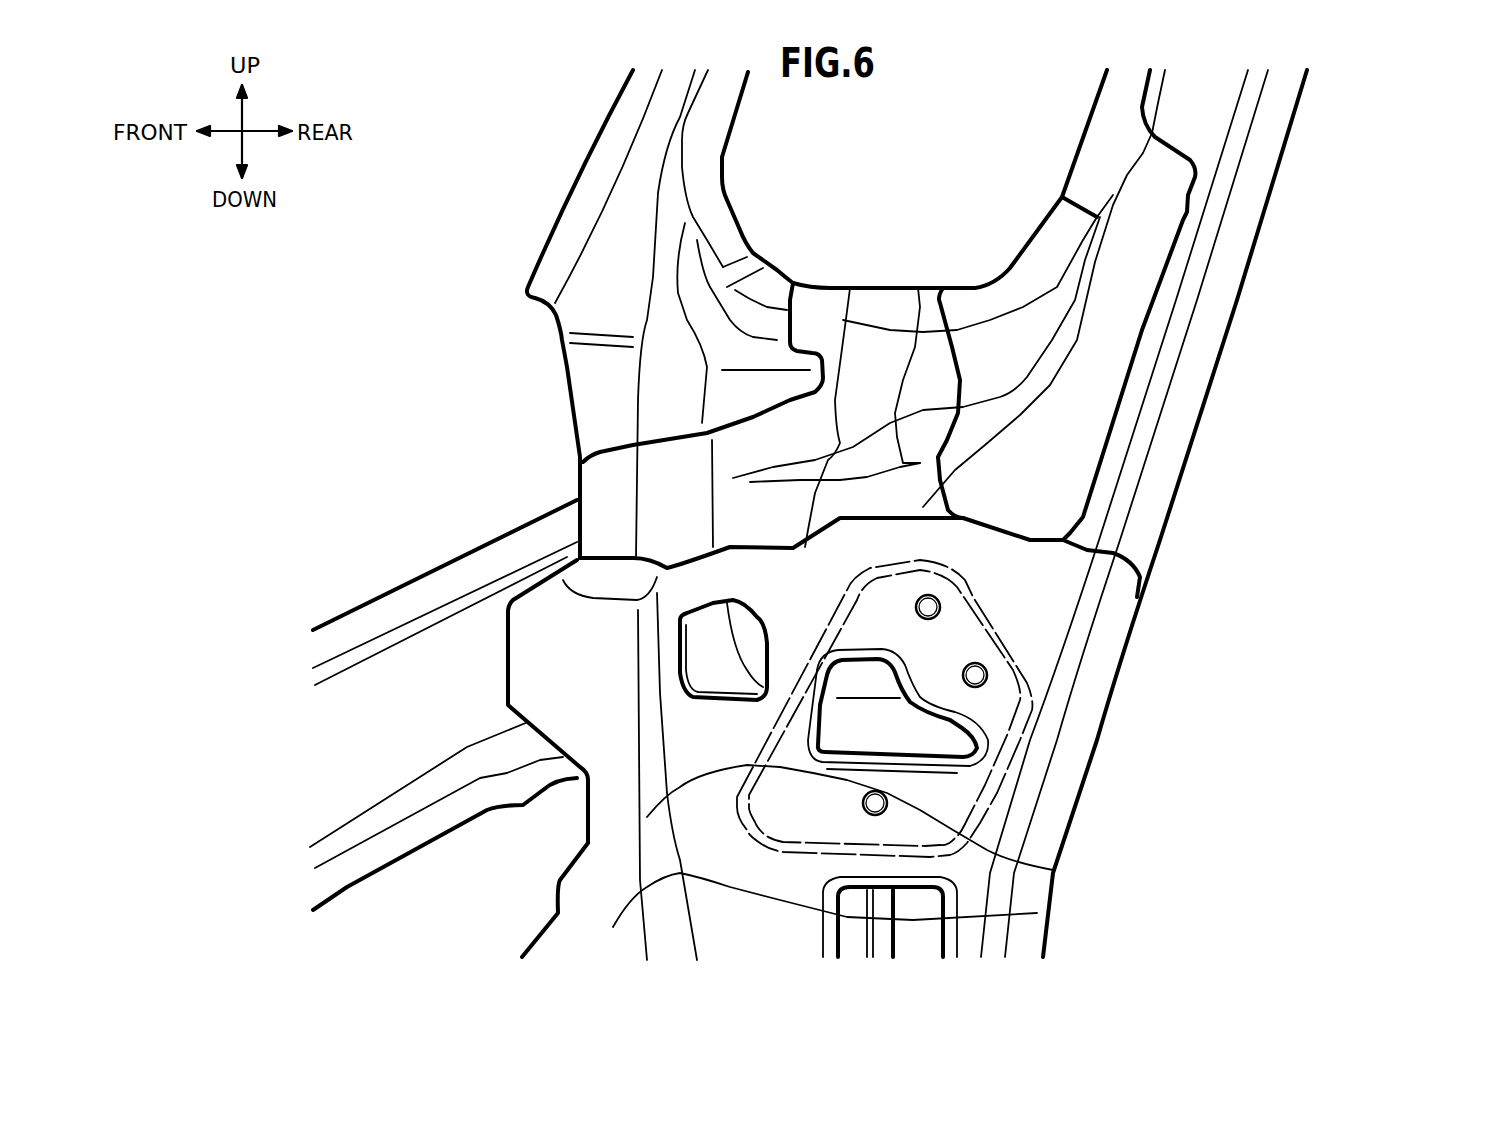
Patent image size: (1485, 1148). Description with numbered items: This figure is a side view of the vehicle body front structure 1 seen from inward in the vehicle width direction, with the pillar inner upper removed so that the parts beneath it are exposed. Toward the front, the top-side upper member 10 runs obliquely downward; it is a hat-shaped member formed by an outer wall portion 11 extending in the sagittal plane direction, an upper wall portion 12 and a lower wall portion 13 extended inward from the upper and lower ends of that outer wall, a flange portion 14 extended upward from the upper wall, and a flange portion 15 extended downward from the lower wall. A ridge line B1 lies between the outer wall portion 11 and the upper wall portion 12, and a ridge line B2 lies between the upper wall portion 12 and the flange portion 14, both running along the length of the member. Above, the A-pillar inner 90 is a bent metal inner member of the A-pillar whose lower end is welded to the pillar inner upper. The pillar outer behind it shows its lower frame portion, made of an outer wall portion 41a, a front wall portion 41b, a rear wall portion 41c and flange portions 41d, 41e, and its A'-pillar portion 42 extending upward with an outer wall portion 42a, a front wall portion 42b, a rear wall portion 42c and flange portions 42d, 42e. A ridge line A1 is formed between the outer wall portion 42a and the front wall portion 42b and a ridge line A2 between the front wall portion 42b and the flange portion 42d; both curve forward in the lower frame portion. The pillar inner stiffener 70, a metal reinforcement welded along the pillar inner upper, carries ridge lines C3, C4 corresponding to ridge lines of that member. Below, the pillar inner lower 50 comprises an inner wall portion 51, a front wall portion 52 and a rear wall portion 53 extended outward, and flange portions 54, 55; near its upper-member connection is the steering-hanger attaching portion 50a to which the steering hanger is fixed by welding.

The vehicle body front structure 1 is at (473, 117).
The top-side upper member 10 is at (191, 827).
The outer wall portion 11 is at (333, 745).
The upper wall portion 12 is at (317, 675).
The lower wall portion 13 is at (320, 850).
The flange portion 14 is at (320, 643).
The flange portion 15 is at (317, 888).
The outer wall portion 41a is at (947, 480).
The front wall portion 41b is at (660, 477).
The rear wall portion 41c is at (1117, 513).
The flange portion 41d is at (597, 512).
The flange portion 41e is at (1140, 543).
The A'-pillar portion 42 is at (1371, 175).
The outer wall portion 42a is at (1180, 132).
The front wall portion 42b is at (1152, 97).
The rear wall portion 42c is at (1210, 225).
The flange portion 42d is at (1090, 175).
The flange portion 42e is at (1230, 262).
The pillar inner lower 50 is at (1282, 758).
The steering-hanger attaching portion 50a is at (1084, 737).
The inner wall portion 51 is at (1047, 628).
The front wall portion 52 is at (1053, 870).
The rear wall portion 53 is at (1020, 833).
The flange portion 54 is at (1037, 913).
The flange portion 55 is at (1030, 942).
The pillar inner stiffener 70 is at (1093, 373).
The A-pillar inner 90 is at (633, 150).
The ridge line A1 is at (918, 288).
The ridge line A2 is at (850, 288).
The ridge line B1 is at (402, 643).
The ridge line B2 is at (387, 637).
The ridge line C3 is at (1113, 250).
The ridge line C4 is at (1052, 385).